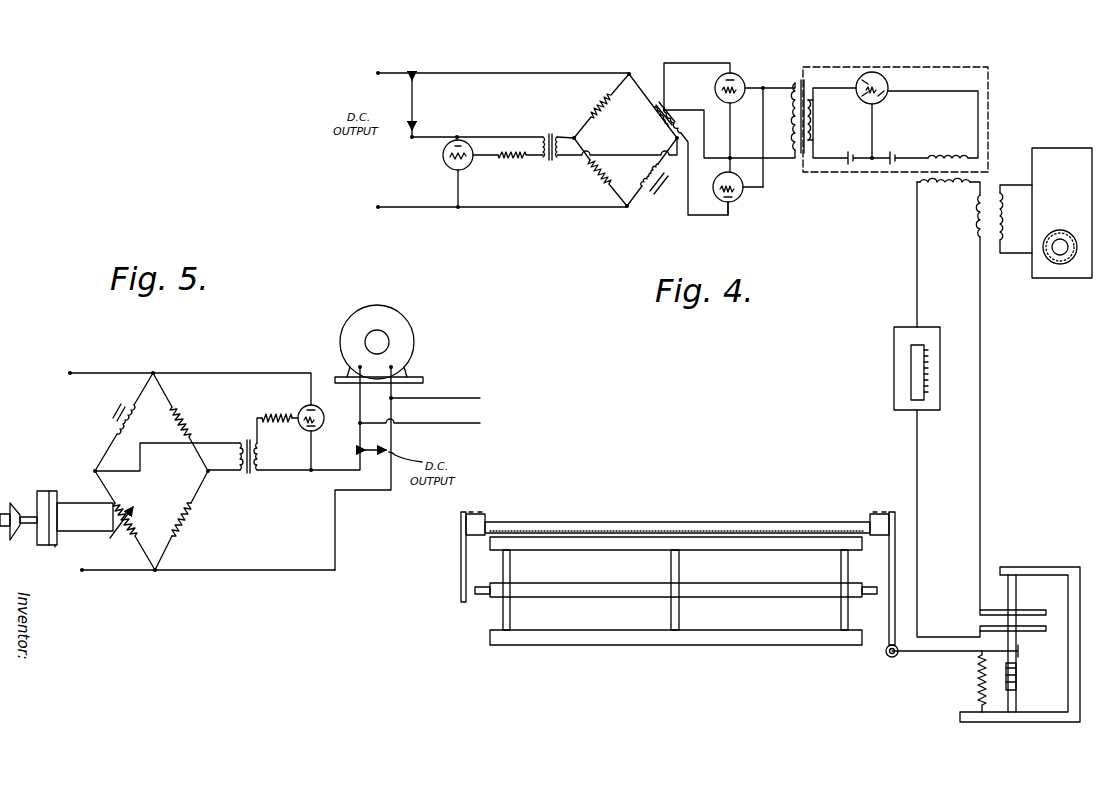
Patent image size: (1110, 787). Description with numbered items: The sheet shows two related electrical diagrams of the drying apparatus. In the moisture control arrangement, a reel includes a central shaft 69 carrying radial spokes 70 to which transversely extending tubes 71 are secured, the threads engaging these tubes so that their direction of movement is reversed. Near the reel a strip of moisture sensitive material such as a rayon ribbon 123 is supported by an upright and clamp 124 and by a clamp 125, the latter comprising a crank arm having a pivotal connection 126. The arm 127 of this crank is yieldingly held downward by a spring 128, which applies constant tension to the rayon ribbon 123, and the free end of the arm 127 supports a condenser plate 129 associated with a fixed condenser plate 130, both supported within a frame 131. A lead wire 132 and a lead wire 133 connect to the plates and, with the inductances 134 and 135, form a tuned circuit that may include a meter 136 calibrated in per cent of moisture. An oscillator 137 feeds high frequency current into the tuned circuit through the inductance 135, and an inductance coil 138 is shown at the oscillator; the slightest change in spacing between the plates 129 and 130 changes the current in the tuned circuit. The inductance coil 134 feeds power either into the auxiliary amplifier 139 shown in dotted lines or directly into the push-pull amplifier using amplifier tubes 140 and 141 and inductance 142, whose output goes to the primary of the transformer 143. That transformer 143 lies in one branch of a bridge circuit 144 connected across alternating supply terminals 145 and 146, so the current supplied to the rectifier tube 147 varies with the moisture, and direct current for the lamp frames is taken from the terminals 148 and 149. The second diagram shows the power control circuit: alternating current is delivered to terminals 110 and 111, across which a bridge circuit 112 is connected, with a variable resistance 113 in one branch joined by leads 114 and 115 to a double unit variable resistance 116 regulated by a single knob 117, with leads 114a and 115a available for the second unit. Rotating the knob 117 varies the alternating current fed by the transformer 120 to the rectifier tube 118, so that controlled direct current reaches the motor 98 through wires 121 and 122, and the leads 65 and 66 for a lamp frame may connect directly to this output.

In FIG. 4, the alternating supply line terminal 145 is at (395, 73).
In FIG. 4, the alternating supply line terminal 146 is at (420, 207).
In FIG. 4, the rectifier tube 147 is at (475, 163).
In FIG. 4, the direct current terminal 148 is at (410, 90).
In FIG. 4, the direct current terminal 149 is at (410, 137).
In FIG. 4, the bridge circuit 144 is at (573, 133).
In FIG. 4, the transformer 143 is at (655, 95).
In FIG. 4, the amplifier tube 140 is at (740, 78).
In FIG. 4, the amplifier tube 141 is at (740, 200).
In FIG. 4, the inductance 142 is at (790, 140).
In FIG. 4, the auxiliary amplifier 139 is at (952, 67).
In FIG. 4, the oscillator 137 is at (1047, 148).
In FIG. 4, the inductance coil 138 is at (1003, 225).
In FIG. 4, the inductance 134 is at (945, 188).
In FIG. 4, the inductance 135 is at (975, 215).
In FIG. 4, the meter 136 is at (894, 365).
In FIG. 4, the lead wire 133 is at (982, 480).
In FIG. 4, the lead wire 132 is at (917, 560).
In FIG. 4, the fixed condenser plate 130 is at (1030, 610).
In FIG. 4, the condenser plate 129 is at (1035, 631).
In FIG. 4, the frame 131 is at (1040, 722).
In FIG. 4, the spring 128 is at (978, 690).
In FIG. 4, the arm 127 is at (940, 655).
In FIG. 4, the pivotal connection 126 is at (887, 660).
In FIG. 4, the clamp 125 is at (898, 530).
In FIG. 4, the rayon ribbon 123 is at (730, 522).
In FIG. 4, the upright and clamp 124 is at (461, 560).
In FIG. 4, the central shaft 69 is at (485, 592).
In FIG. 4, the radial spokes 70 is at (510, 620).
In FIG. 4, the tubes 71 is at (716, 645).
In FIG. 5, the alternating current terminal 110 is at (70, 373).
In FIG. 5, the alternating current terminal 111 is at (82, 570).
In FIG. 5, the bridge circuit 112 is at (199, 498).
In FIG. 5, the variable resistance 113 is at (150, 500).
In FIG. 5, the lead 114 is at (85, 490).
In FIG. 5, the lead 114a is at (37, 505).
In FIG. 5, the lead 115 is at (92, 531).
In FIG. 5, the lead 115a is at (47, 545).
In FIG. 5, the double unit variable resistance 116 is at (50, 491).
In FIG. 5, the knob 117 is at (12, 540).
In FIG. 5, the rectifier tube 118 is at (300, 410).
In FIG. 5, the transformer 120 is at (245, 470).
In FIG. 5, the wire 121 is at (335, 470).
In FIG. 5, the wire 122 is at (370, 490).
In FIG. 5, the motor 98 is at (405, 335).
In FIG. 5, the lead 65 is at (452, 398).
In FIG. 5, the lead 66 is at (452, 423).